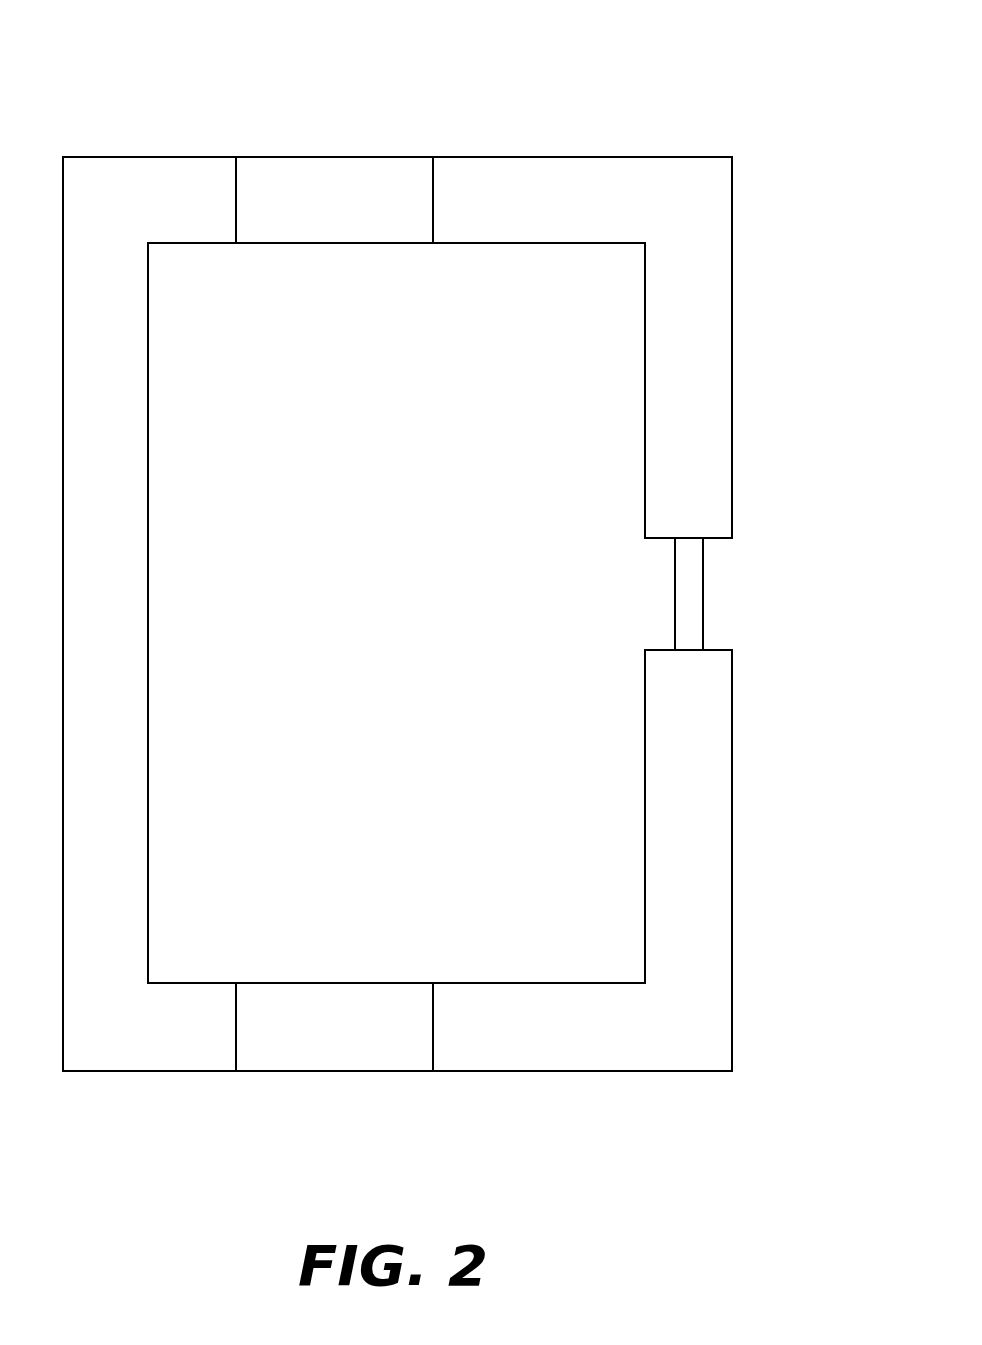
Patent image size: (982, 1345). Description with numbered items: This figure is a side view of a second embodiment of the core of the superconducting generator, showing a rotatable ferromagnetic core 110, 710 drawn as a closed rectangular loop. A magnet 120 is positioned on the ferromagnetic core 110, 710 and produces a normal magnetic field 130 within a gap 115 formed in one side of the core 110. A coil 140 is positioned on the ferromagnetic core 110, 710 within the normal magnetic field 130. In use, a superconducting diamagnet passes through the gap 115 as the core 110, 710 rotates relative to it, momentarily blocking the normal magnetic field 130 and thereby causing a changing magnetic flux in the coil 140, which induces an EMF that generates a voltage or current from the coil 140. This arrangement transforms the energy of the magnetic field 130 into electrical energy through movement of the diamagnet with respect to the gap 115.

The ferromagnetic core 710 is at (172, 106).
The ferromagnetic core 110 is at (537, 157).
The magnet 120 is at (342, 1071).
The coil 140 is at (345, 157).
The gap 115 is at (720, 563).
The normal magnetic field 130 is at (703, 620).